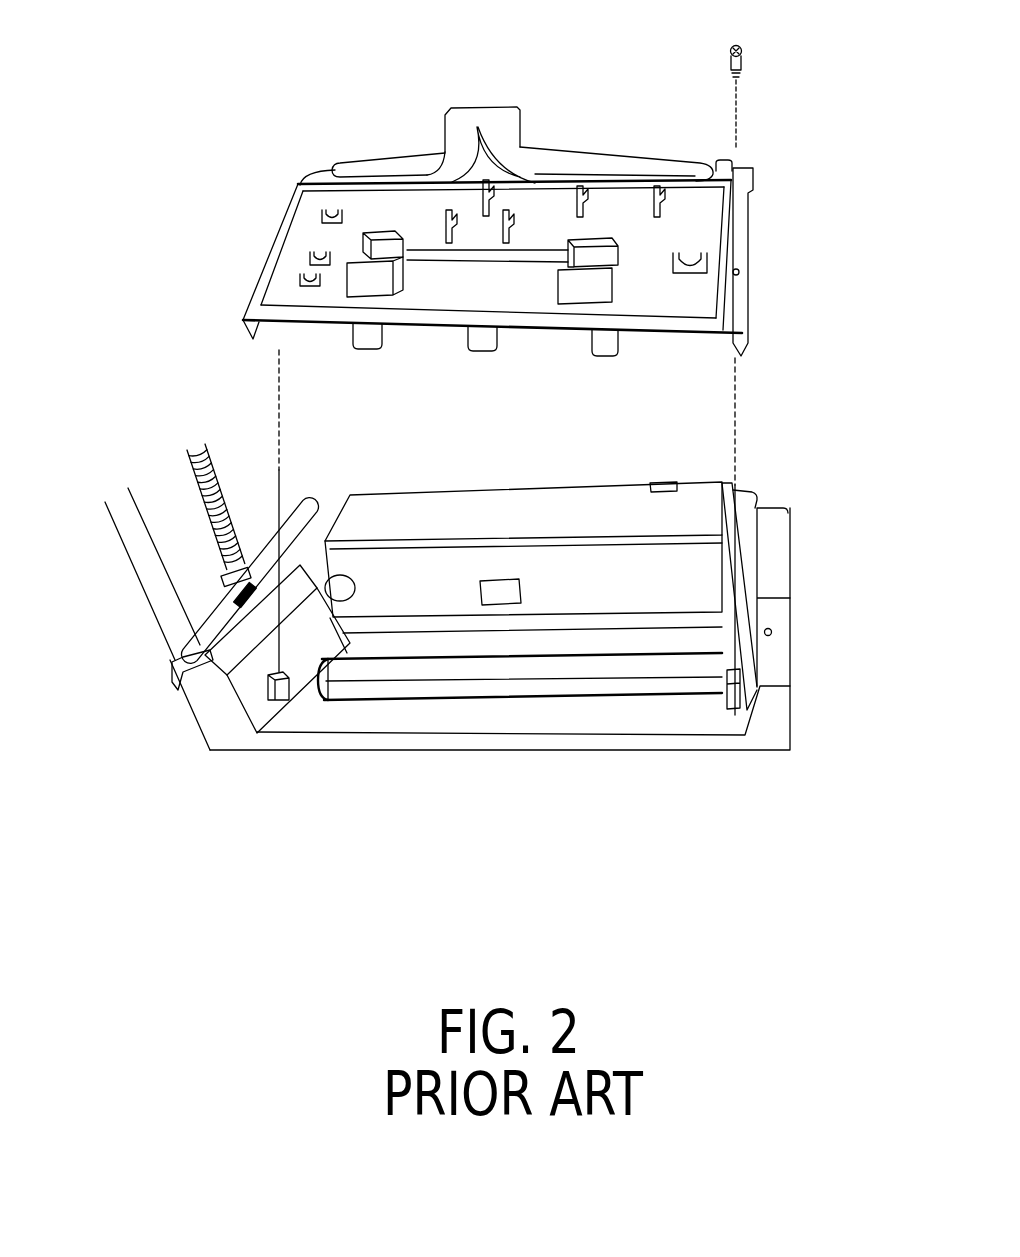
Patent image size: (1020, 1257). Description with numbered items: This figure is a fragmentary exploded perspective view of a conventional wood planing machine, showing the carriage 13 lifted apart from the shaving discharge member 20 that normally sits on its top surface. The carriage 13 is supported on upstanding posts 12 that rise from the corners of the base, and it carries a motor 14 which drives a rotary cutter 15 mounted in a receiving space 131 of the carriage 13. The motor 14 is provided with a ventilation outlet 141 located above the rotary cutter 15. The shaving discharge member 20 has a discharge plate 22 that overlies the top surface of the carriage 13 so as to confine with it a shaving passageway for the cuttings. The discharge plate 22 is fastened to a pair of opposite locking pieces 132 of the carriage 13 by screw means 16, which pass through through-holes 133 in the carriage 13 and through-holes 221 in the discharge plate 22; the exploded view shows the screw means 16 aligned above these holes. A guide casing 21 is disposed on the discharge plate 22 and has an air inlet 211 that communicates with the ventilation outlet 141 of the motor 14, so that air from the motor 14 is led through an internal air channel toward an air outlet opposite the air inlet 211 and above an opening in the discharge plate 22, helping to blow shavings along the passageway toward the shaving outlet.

The upstanding post 12 is at (165, 617).
The carriage 13 is at (777, 552).
The receiving space 131 is at (415, 717).
The locking piece 132 is at (300, 683).
The through-hole 133 is at (253, 683).
The motor 14 is at (562, 554).
The ventilation outlet 141 is at (497, 587).
The rotary cutter 15 is at (648, 687).
The screw means 16 is at (745, 63).
The shaving discharge member 20 is at (556, 182).
The guide casing 21 is at (560, 160).
The air inlet 211 is at (527, 118).
The discharge plate 22 is at (735, 288).
The through-hole 221 is at (743, 267).